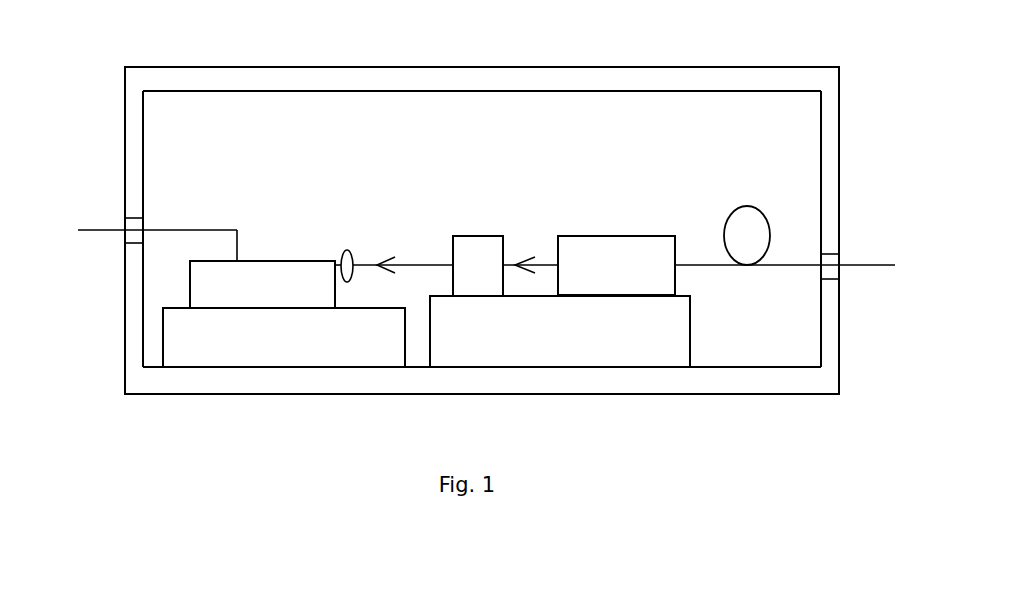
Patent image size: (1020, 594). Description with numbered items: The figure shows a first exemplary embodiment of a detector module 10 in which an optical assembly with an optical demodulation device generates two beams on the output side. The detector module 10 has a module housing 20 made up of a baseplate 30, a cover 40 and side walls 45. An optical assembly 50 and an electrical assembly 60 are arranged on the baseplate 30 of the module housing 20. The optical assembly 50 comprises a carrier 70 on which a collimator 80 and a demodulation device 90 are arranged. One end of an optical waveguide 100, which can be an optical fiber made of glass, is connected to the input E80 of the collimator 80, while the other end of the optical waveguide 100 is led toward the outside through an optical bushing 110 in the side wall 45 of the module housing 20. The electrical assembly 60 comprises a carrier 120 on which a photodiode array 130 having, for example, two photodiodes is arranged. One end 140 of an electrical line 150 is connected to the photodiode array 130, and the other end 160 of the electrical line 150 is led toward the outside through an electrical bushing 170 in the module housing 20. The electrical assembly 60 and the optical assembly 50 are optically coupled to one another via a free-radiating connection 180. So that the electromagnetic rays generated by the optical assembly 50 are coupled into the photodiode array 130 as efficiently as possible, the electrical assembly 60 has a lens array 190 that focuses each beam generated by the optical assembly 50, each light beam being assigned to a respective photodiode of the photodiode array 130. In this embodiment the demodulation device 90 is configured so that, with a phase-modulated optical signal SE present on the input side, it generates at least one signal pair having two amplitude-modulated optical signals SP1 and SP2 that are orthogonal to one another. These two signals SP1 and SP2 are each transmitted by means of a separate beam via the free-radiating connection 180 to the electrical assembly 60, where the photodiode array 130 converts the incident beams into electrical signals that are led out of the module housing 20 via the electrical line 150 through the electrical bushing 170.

The detector module 10 is at (507, 51).
The module housing 20 is at (662, 73).
The baseplate 30 is at (515, 383).
The cover 40 is at (353, 77).
The side walls 45 is at (830, 192).
The optical assembly 50 is at (565, 363).
The electrical assembly 60 is at (284, 370).
The carrier 70 is at (625, 347).
The collimator 80 is at (616, 265).
The input of the collimator E80 is at (678, 253).
The demodulation device 90 is at (478, 266).
The optical waveguide 100 is at (728, 265).
The optical bushing 110 is at (832, 265).
The carrier 120 is at (338, 347).
The photodiode array 130 is at (262, 284).
The end of the electrical line 140 is at (239, 258).
The electrical line 150 is at (227, 228).
The other end of the electrical line 160 is at (98, 231).
The electrical bushing 170 is at (135, 230).
The free-radiating connection 180 is at (403, 267).
The lens array 190 is at (345, 252).
The phase-modulated optical signal SE is at (530, 255).
The amplitude-modulated optical signal SP1 is at (392, 255).
The amplitude-modulated optical signal SP2 is at (410, 268).